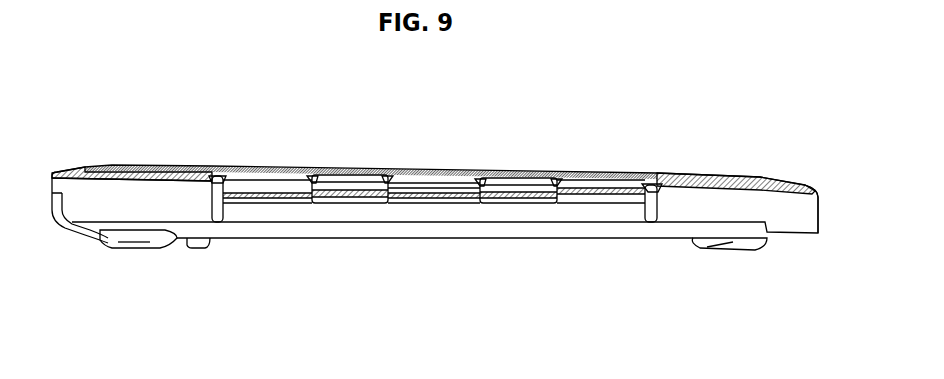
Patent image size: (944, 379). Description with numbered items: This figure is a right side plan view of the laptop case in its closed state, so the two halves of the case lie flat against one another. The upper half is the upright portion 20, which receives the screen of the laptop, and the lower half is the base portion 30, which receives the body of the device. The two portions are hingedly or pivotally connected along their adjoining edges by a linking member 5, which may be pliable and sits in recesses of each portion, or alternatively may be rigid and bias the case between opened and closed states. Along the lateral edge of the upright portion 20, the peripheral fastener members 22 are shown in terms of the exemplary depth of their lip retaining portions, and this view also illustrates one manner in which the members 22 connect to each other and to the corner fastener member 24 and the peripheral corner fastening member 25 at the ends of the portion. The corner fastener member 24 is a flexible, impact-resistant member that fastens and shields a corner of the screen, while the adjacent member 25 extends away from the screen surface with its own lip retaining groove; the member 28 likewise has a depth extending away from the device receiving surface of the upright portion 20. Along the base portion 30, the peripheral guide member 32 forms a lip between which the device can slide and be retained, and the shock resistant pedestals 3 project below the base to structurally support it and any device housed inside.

The upright portion 20 is at (632, 116).
The peripheral fastener member 22 is at (525, 182).
The corner fastener member 24 is at (822, 218).
The peripheral corner fastening member 25 is at (768, 185).
The member 28 is at (105, 167).
The base portion 30 is at (552, 278).
The peripheral guide member 32 is at (440, 202).
The shock resistant pedestal 3 is at (122, 246).
The linking member 5 is at (193, 242).